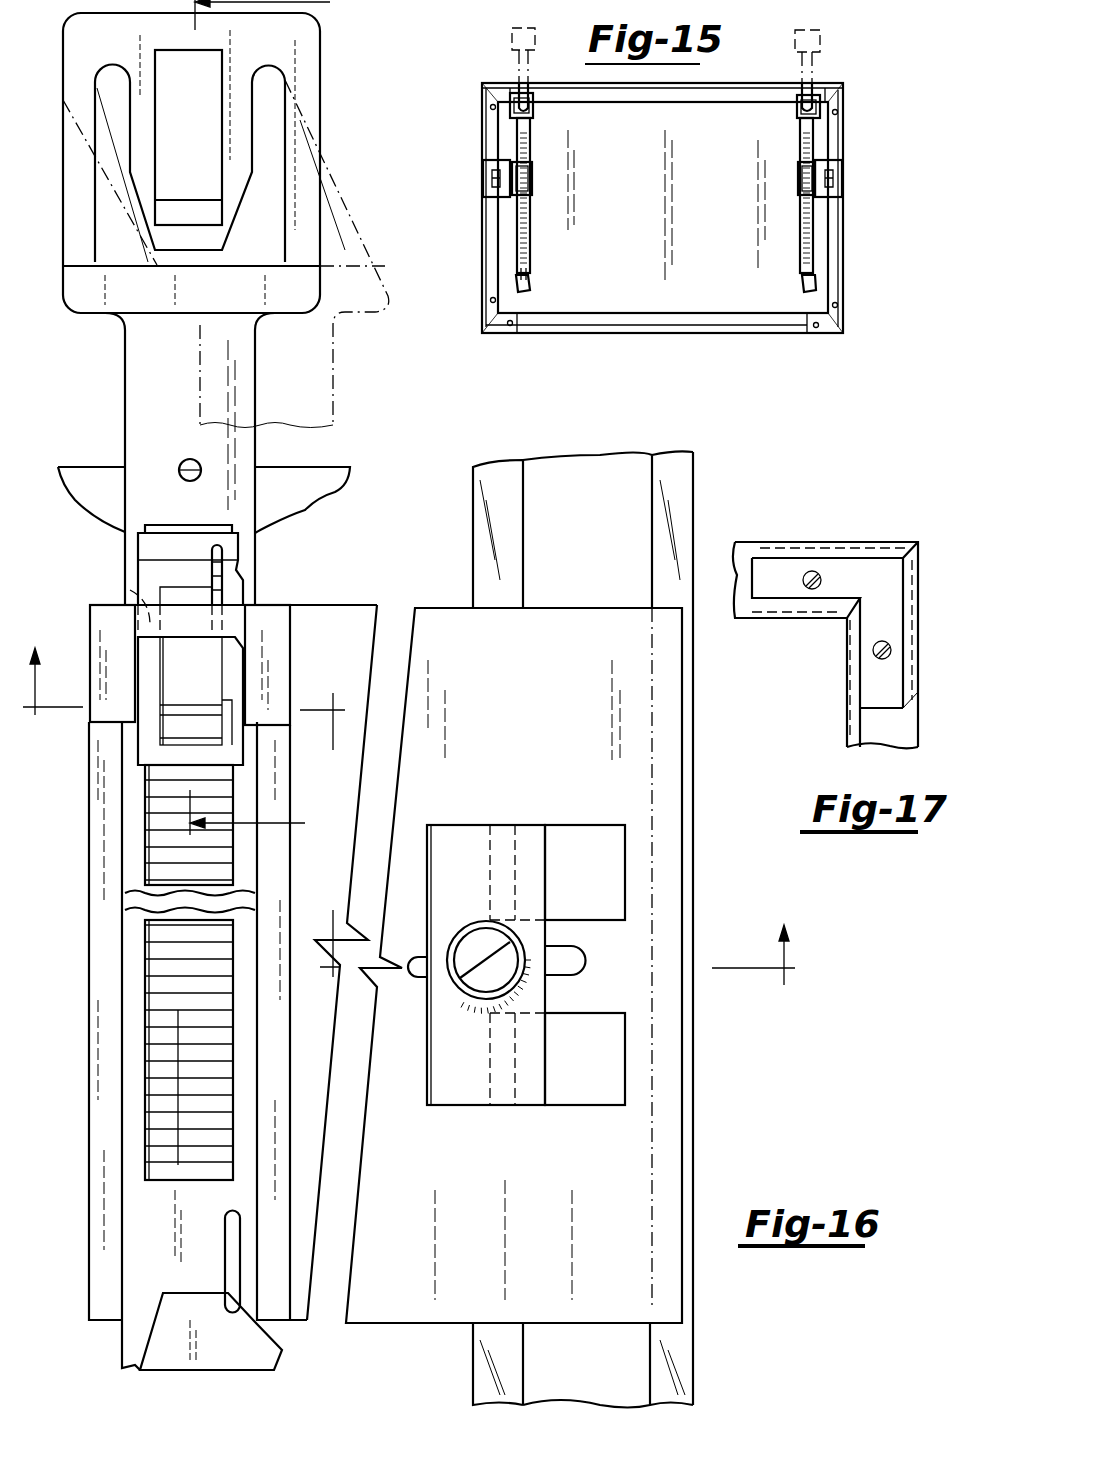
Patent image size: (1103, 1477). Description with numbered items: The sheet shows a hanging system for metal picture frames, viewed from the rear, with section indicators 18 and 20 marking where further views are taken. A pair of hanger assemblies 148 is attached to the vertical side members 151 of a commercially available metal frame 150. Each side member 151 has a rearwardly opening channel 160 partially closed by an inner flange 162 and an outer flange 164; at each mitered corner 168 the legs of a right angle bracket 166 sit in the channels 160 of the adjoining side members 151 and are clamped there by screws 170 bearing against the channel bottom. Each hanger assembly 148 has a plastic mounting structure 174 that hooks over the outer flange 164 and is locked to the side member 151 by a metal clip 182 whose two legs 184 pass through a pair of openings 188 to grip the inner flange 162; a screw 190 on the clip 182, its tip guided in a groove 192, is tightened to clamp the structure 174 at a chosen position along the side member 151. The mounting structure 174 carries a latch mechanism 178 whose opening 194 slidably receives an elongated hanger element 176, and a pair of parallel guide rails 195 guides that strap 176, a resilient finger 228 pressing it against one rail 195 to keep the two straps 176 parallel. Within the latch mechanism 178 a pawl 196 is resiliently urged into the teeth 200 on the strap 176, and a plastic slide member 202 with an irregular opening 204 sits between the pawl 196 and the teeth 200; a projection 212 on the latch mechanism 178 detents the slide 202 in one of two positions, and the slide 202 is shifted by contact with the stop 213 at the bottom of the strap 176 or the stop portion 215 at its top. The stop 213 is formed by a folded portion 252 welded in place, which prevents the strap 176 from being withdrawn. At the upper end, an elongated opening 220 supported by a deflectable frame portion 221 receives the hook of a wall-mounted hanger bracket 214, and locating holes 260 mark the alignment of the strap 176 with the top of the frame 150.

In FIG. 16, the section line 18- 18 is at (415, 799).
In FIG. 16, the section line 20- 20 is at (283, 421).
In FIG. 15, the hanger assembly 148 is at (538, 168).
In FIG. 15, the metal frame 150 is at (735, 83).
In FIG. 16, the metal frame 150 is at (322, 490).
In FIG. 17, the side member 151 is at (845, 722).
In FIG. 17, the channel 160 is at (870, 737).
In FIG. 17, the inner flange 162 is at (742, 612).
In FIG. 16, the inner flange 162 is at (480, 517).
In FIG. 17, the outer flange 164 is at (757, 545).
In FIG. 16, the outer flange 164 is at (665, 488).
In FIG. 15, the right angle bracket 166 is at (483, 320).
In FIG. 17, the right angle bracket 166 is at (830, 586).
In FIG. 15, the mitered corner 168 is at (482, 86).
In FIG. 17, the mitered corner 168 is at (918, 540).
In FIG. 17, the screw 170 is at (812, 571).
In FIG. 15, the mounting structure 174 is at (492, 192).
In FIG. 16, the mounting structure 174 is at (450, 575).
In FIG. 16, the elongated hanger element 176 is at (262, 452).
In FIG. 16, the latch mechanism 178 is at (272, 638).
In FIG. 16, the metal clip 182 is at (465, 840).
In FIG. 16, the leg 184 is at (530, 880).
In FIG. 16, the opening 188 is at (560, 838).
In FIG. 16, the screw 190 is at (500, 980).
In FIG. 16, the groove 192 is at (565, 963).
In FIG. 16, the opening 194 is at (132, 590).
In FIG. 16, the guide rail 195 is at (100, 860).
In FIG. 16, the pawl 196 is at (198, 686).
In FIG. 16, the teeth 200 is at (225, 805).
In FIG. 16, the slide member 202 is at (145, 752).
In FIG. 16, the opening 204 is at (222, 717).
In FIG. 16, the complementary projection 212 is at (240, 618).
In FIG. 15, the stop 213 is at (525, 272).
In FIG. 16, the stop 213 is at (186, 1265).
In FIG. 15, the hanger bracket 214 is at (518, 78).
In FIG. 16, the stop portion 215 is at (160, 310).
In FIG. 16, the elongated opening 220 is at (222, 135).
In FIG. 16, the frame portion 221 is at (310, 175).
In FIG. 15, the finger 228 is at (532, 278).
In FIG. 16, the finger 228 is at (255, 1282).
In FIG. 16, the folded portion 252 is at (250, 1363).
In FIG. 16, the locating hole 260 is at (185, 460).